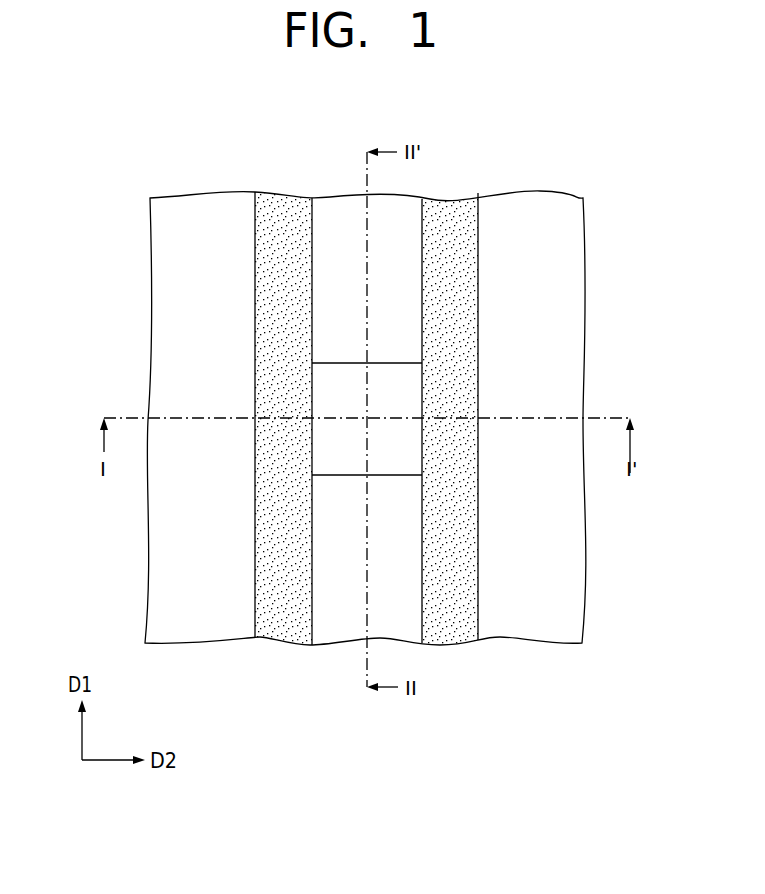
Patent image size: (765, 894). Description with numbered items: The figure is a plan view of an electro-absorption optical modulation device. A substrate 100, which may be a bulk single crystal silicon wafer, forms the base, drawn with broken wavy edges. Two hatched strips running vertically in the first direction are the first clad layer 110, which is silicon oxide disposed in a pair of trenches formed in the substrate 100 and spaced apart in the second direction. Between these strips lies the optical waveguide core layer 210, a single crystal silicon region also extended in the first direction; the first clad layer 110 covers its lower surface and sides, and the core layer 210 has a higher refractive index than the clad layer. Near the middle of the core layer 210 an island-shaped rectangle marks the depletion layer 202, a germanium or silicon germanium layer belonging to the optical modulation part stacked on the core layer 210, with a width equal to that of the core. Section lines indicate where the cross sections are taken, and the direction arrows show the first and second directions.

The substrate 100 is at (573, 602).
The first clad layer 110 is at (457, 630).
The depletion layer 202 is at (397, 392).
The optical waveguide core layer 210 is at (332, 630).